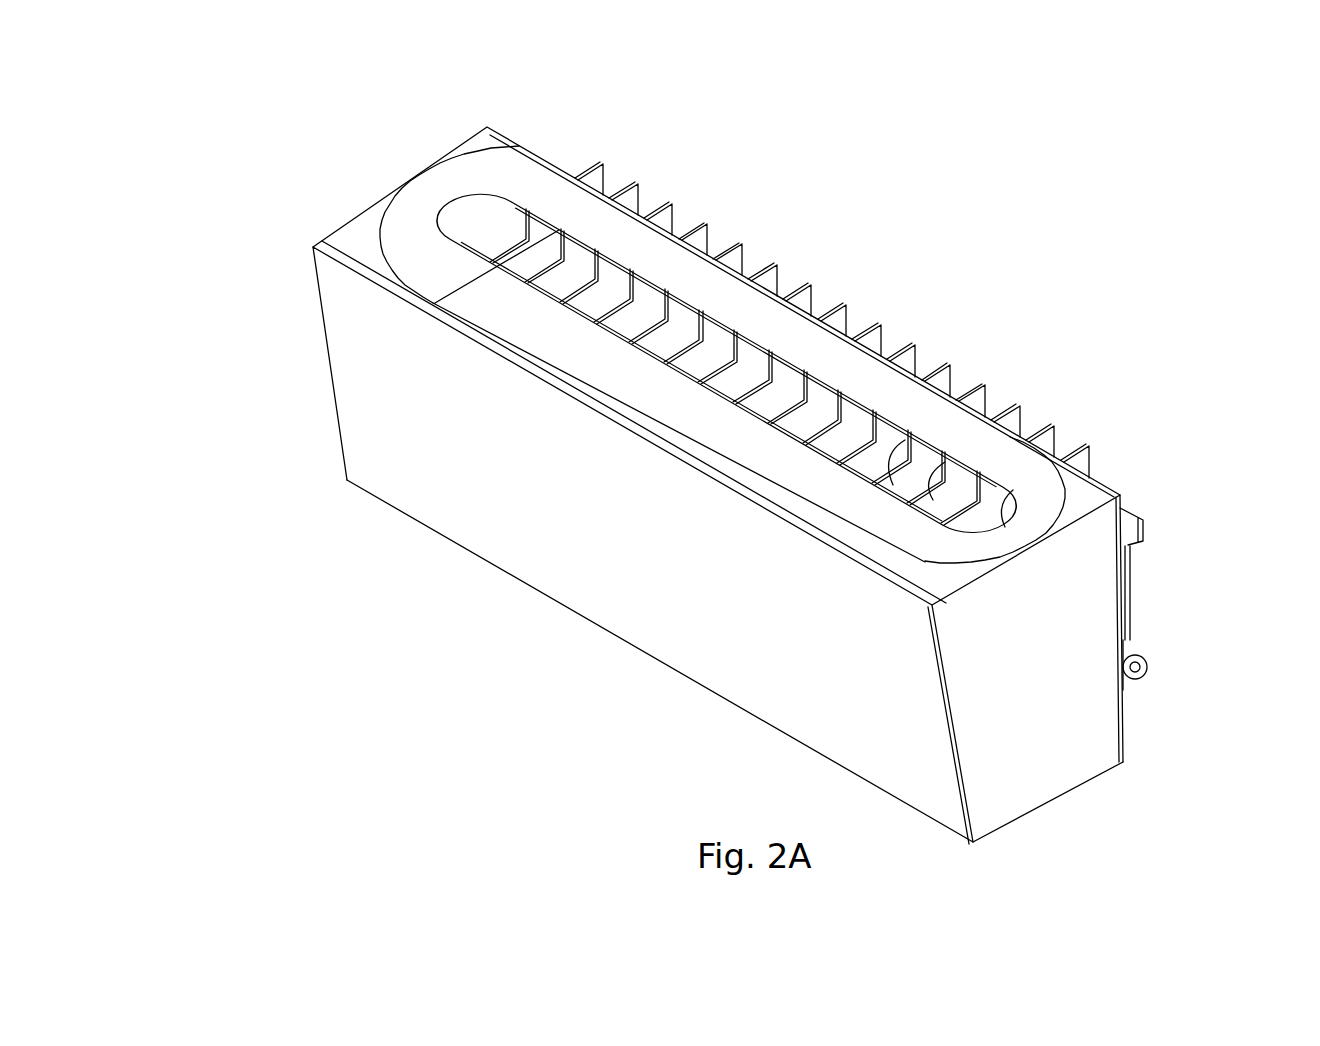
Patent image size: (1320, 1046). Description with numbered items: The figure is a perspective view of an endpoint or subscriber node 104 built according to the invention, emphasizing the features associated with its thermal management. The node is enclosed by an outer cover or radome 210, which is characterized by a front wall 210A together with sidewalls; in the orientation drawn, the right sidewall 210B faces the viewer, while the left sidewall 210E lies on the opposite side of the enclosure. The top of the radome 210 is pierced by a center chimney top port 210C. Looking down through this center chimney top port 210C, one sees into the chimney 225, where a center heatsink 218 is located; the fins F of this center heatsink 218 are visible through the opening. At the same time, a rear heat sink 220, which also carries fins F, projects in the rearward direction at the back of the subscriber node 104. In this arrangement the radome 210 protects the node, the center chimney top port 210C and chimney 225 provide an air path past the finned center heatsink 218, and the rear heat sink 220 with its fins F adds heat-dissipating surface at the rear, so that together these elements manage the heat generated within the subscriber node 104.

The subscriber node 104 is at (252, 84).
The radome 210 is at (422, 434).
The front wall 210A is at (350, 380).
The right sidewall 210B is at (1075, 740).
The center chimney top port 210C is at (460, 224).
The left sidewall 210E is at (322, 243).
The center heatsink 218 is at (860, 445).
The rear heat sink 220 is at (830, 307).
The chimney 225 is at (752, 372).
The fins F is at (577, 277).